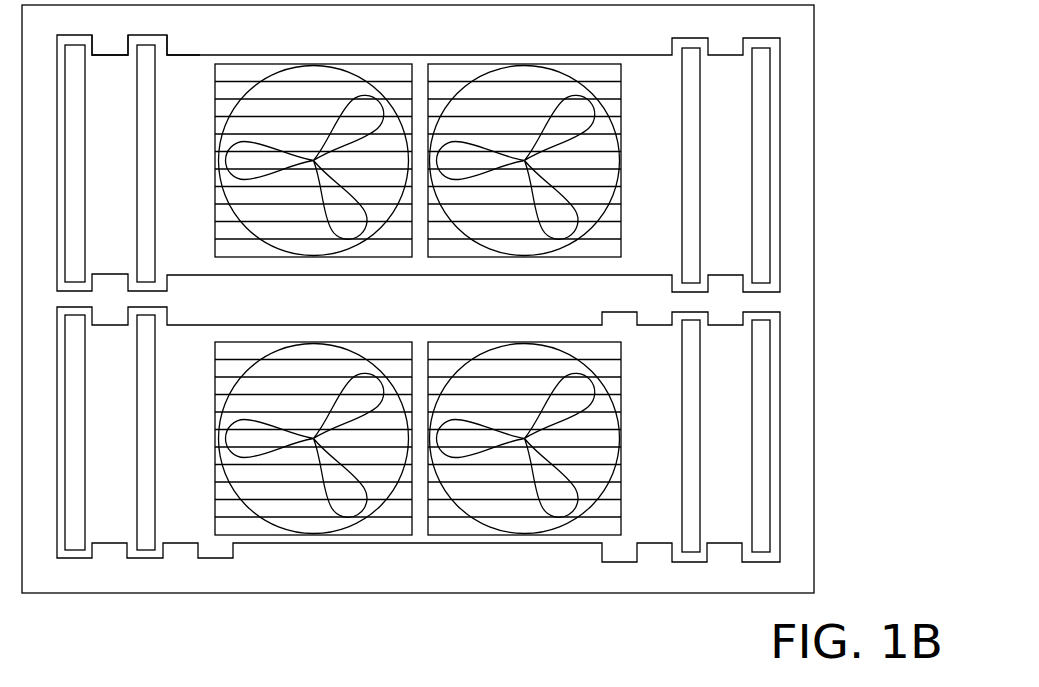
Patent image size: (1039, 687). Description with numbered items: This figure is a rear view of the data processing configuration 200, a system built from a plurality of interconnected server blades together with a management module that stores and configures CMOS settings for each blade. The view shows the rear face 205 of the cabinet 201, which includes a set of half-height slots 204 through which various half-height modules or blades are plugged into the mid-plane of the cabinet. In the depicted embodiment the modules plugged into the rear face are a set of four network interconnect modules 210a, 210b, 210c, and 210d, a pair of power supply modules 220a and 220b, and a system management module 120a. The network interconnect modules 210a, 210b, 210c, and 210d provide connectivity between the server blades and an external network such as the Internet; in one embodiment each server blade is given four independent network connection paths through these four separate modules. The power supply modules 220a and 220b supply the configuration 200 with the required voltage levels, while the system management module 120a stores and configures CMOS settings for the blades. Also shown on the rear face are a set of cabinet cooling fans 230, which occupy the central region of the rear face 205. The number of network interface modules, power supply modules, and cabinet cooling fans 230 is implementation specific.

The data processing configuration 200 is at (878, 190).
The cabinet 201 is at (814, 358).
The half-height slots 204 is at (90, 50).
The rear face 205 is at (802, 590).
The network interconnect module 210a is at (183, 127).
The network interconnect module 210b is at (145, 385).
The network interconnect module 210c is at (691, 127).
The network interconnect module 210d is at (691, 388).
The power supply module 220a is at (75, 143).
The power supply module 220b is at (75, 385).
The system management module 120a is at (761, 127).
The cabinet cooling fans 230 is at (450, 250).